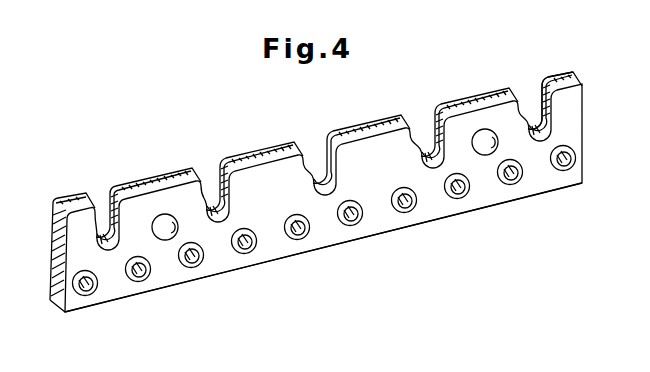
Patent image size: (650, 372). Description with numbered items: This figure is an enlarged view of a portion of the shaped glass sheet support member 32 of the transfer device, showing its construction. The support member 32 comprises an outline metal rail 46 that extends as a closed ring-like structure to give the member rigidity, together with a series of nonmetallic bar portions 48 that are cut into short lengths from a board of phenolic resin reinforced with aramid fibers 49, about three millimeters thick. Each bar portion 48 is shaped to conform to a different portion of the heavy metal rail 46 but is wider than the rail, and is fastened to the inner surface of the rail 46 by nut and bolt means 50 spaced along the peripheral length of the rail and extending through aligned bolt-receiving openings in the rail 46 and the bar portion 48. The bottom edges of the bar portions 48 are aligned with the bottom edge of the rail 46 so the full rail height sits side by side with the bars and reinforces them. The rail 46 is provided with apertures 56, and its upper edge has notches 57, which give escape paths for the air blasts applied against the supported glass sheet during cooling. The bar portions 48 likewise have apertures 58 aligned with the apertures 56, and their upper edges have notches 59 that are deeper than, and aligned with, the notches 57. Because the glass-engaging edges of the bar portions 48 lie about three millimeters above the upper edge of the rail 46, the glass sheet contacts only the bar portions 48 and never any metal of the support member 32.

The shaped glass sheet support member 32 is at (217, 138).
The outline metal rail 46 is at (332, 236).
The nonmetallic bar portions 48 is at (162, 180).
The aramid fibers 49 is at (467, 100).
The nut and bolt means 50 is at (176, 227).
The apertures 56 is at (150, 278).
The notches 57 is at (117, 196).
The apertures 58 is at (523, 177).
The notches 59 is at (328, 142).